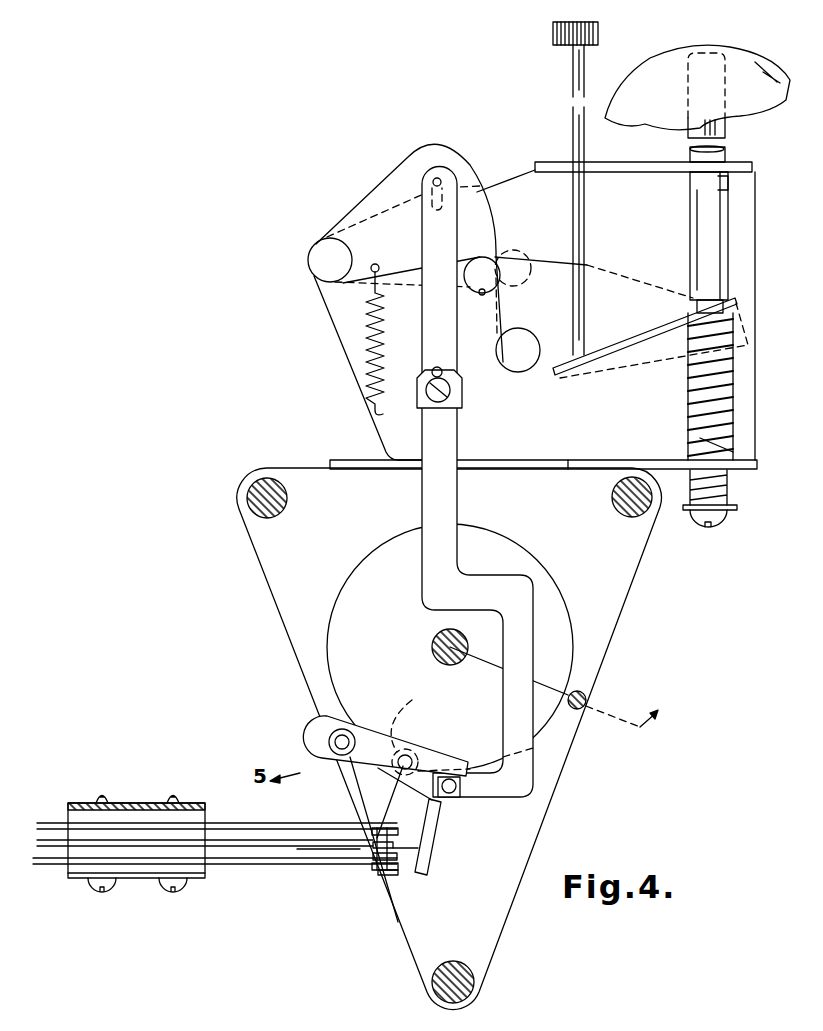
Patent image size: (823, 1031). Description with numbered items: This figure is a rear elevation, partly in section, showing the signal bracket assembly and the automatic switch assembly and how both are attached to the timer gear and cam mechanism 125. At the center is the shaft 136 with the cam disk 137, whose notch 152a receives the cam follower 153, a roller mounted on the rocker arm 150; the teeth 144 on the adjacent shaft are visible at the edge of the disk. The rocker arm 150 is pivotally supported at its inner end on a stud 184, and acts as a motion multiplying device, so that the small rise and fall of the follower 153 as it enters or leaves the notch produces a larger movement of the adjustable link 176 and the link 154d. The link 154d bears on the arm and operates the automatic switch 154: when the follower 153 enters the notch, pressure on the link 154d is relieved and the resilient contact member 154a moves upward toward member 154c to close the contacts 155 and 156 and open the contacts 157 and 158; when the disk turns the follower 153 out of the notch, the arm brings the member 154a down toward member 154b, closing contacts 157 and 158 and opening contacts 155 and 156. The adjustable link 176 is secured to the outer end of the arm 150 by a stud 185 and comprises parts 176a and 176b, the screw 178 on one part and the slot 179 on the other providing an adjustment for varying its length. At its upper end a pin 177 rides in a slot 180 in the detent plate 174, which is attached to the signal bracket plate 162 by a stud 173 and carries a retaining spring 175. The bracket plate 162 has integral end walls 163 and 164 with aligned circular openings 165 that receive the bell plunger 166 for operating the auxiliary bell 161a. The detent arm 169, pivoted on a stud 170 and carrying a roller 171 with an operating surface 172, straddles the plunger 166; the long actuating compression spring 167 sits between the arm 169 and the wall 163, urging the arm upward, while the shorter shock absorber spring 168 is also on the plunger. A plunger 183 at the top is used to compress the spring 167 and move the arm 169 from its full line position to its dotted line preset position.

The timer gear and cam mechanism 125 is at (606, 609).
The shaft 136 is at (433, 638).
The cam disk 137 is at (546, 580).
The teeth 144 is at (585, 702).
The rocker arm 150 is at (352, 763).
The notch 152a is at (408, 748).
The cam follower 153 is at (356, 810).
The automatic switch 154 is at (207, 803).
The resilient contact member 154a is at (296, 862).
The contact member 154b is at (268, 866).
The contact member 154c is at (256, 806).
The link 154d is at (433, 818).
The contact 155 is at (373, 870).
The contact 156 is at (378, 820).
The contact 157 is at (394, 876).
The contact 158 is at (385, 830).
The auxiliary bell 161a is at (725, 50).
The signal bracket plate 162 is at (501, 186).
The end wall 163 is at (748, 470).
The end wall 164 is at (652, 172).
The circular openings 165 is at (725, 182).
The bell plunger 166 is at (712, 240).
The actuating compression spring 167 is at (735, 375).
The shock absorber spring 168 is at (735, 498).
The detent arm 169 is at (604, 282).
The stud 170 is at (517, 372).
The roller 171 is at (482, 275).
The operating surface 172 is at (470, 290).
The stud 173 is at (326, 250).
The detent plate 174 is at (412, 168).
The retaining spring 175 is at (365, 362).
The adjustable link 176 is at (436, 424).
The link part 176a is at (432, 318).
The link part 176b is at (420, 483).
The pin 177 is at (439, 178).
The screw 178 is at (448, 410).
The slot 179 is at (444, 380).
The slot 180 is at (460, 180).
The plunger 183 is at (553, 33).
The stud 184 is at (333, 730).
The stud 185 is at (456, 795).